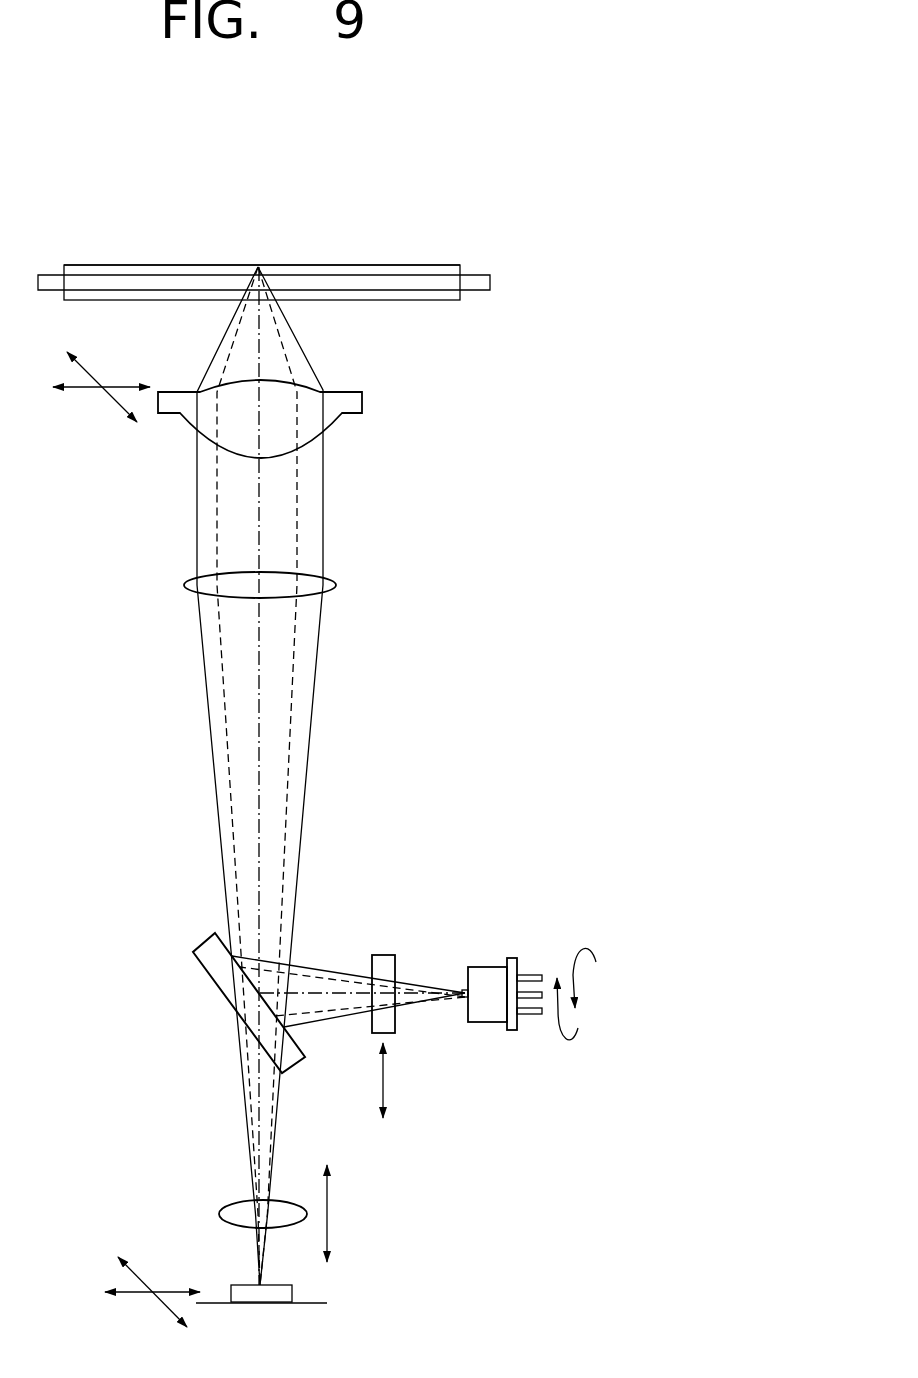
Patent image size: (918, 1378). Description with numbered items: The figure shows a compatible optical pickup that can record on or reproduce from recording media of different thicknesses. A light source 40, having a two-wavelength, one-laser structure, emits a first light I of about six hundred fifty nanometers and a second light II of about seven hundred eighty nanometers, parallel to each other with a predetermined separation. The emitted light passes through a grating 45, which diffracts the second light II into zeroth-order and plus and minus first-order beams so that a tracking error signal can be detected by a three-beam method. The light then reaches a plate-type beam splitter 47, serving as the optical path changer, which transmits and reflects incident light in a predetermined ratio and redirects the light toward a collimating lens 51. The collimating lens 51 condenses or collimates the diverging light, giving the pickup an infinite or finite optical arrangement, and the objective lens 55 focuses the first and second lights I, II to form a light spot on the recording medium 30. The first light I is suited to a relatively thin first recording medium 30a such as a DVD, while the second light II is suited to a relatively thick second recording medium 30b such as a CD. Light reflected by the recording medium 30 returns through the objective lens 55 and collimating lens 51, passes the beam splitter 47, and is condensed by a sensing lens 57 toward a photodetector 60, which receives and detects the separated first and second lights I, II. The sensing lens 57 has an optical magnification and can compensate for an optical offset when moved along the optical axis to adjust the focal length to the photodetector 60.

The recording medium 30 is at (339, 229).
The first recording medium 30a is at (490, 283).
The second recording medium 30b is at (420, 265).
The objective lens 55 is at (362, 403).
The collimating lens 51 is at (336, 585).
The first light I is at (313, 710).
The second light II is at (290, 763).
The grating 45 is at (384, 955).
The light source 40 is at (490, 1022).
The plate-type beam splitter 47 is at (295, 1063).
The sensing lens 57 is at (217, 1214).
The photodetector 60 is at (292, 1295).